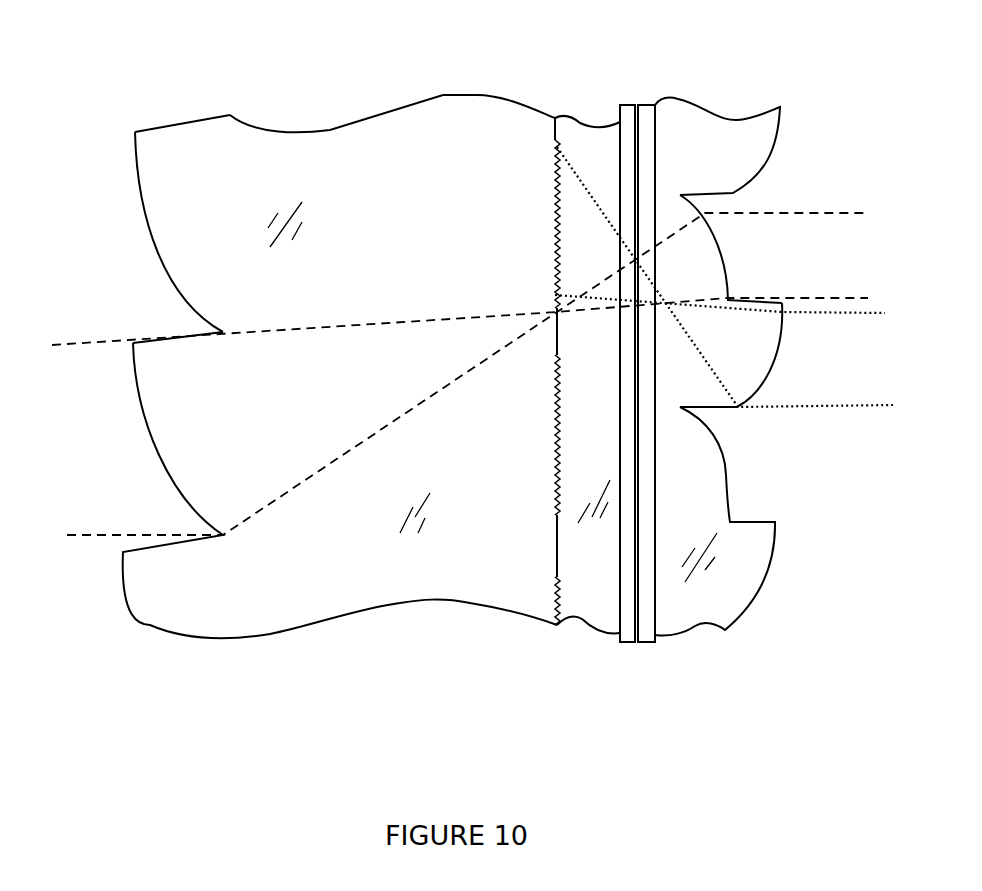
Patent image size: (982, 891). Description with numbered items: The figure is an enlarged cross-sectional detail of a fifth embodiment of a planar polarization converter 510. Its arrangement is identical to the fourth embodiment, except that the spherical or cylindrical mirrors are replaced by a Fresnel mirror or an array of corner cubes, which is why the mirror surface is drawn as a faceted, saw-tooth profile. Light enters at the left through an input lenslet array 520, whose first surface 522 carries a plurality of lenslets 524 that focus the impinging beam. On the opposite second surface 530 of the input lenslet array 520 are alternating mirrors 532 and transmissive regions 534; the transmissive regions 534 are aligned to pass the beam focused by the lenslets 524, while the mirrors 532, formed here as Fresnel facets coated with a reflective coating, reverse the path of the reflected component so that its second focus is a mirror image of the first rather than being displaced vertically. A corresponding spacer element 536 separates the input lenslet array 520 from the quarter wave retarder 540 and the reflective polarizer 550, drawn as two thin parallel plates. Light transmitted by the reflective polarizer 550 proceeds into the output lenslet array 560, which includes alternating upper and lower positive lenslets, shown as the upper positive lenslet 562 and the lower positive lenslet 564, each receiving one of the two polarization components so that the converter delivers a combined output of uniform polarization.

The polarization converter 510 is at (394, 39).
The input lenslet array 520 is at (327, 585).
The first surface 522 is at (133, 129).
The lenslets 524 is at (160, 280).
The second surface 530 is at (559, 116).
The mirrors 532 is at (544, 207).
The transmissive regions 534 is at (567, 332).
The spacer element 536 is at (578, 620).
The quarter wave retarder 540 is at (628, 647).
The reflective polarizer 550 is at (651, 648).
The output lenslet array 560 is at (701, 609).
The upper positive lenslet 562 is at (736, 271).
The lower positive lenslet 564 is at (775, 373).